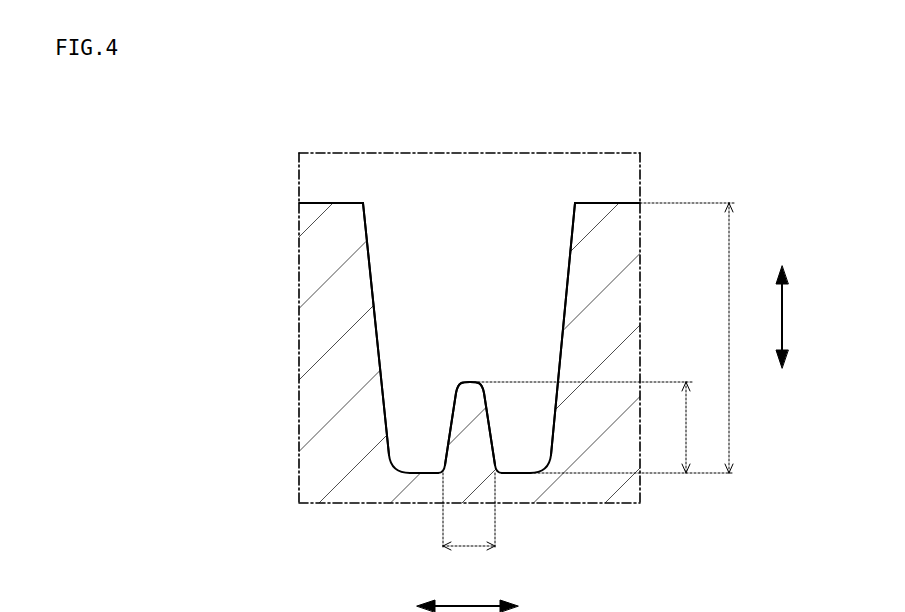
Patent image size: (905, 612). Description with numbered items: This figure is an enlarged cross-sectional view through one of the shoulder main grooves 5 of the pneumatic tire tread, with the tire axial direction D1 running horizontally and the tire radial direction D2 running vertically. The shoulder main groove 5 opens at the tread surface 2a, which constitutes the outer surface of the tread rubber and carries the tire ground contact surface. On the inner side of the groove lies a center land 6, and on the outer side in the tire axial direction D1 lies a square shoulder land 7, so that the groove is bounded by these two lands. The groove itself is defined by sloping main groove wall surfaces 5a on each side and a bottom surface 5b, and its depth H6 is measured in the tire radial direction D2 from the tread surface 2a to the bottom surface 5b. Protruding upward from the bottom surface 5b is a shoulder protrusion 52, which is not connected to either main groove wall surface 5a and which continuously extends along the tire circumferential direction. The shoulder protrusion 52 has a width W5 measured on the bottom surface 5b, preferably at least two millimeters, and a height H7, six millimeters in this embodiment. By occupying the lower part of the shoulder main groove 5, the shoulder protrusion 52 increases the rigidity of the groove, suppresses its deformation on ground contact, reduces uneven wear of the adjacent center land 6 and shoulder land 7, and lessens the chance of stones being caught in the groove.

The tread surface 2a is at (316, 202).
The center land 6 is at (334, 202).
The shoulder land 7 is at (609, 200).
The shoulder main groove 5 is at (537, 196).
The main groove wall surface 5a is at (378, 285).
The bottom surface 5b is at (512, 472).
The shoulder protrusion 52 is at (470, 381).
The depth of shoulder main groove H6 is at (716, 338).
The height of shoulder protrusion H7 is at (672, 427).
The width of shoulder protrusion W5 is at (469, 534).
The tire axial direction D1 is at (467, 596).
The tire radial direction D2 is at (770, 317).